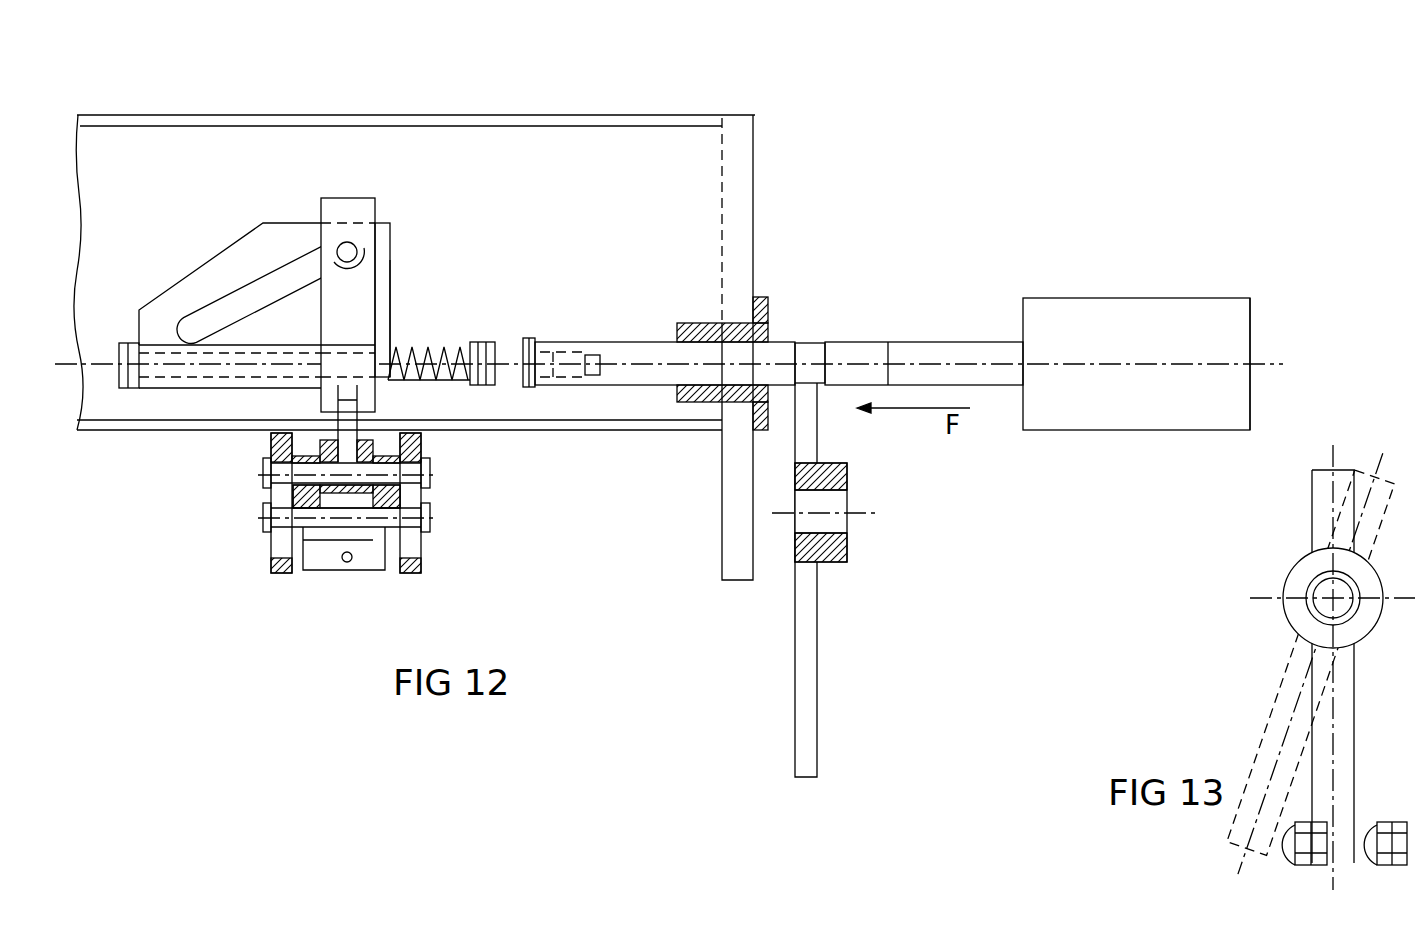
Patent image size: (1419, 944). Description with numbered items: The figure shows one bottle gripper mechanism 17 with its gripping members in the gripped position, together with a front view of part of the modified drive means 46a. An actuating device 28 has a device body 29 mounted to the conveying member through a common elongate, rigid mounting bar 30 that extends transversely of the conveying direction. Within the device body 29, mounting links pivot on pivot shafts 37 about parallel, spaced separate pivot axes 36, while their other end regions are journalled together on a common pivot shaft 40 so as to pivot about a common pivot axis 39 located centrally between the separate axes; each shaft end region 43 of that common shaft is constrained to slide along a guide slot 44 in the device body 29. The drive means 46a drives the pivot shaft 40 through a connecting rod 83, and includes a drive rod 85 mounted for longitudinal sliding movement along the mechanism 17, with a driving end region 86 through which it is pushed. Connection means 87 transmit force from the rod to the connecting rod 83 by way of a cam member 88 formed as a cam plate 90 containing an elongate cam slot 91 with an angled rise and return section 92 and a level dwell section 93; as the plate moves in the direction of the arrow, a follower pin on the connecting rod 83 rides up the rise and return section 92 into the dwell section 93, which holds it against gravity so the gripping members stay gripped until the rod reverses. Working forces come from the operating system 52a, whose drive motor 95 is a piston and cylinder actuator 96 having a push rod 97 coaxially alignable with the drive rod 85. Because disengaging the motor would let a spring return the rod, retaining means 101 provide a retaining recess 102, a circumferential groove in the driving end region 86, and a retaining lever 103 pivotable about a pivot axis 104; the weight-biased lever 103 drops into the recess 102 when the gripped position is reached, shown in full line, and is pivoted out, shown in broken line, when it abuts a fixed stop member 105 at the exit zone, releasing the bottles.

In FIG. 12, the bottle gripper mechanism 17 is at (369, 540).
In FIG. 12, the actuating device 28 is at (407, 514).
In FIG. 12, the device body 29 is at (425, 444).
In FIG. 12, the mounting bar 30 is at (583, 157).
In FIG. 12, the separate pivot axis 36 is at (430, 525).
In FIG. 12, the pivot shaft 37 is at (300, 515).
In FIG. 12, the common pivot axis 39 is at (410, 478).
In FIG. 12, the pivot shaft 40 is at (292, 460).
In FIG. 12, the shaft end region 43 is at (280, 479).
In FIG. 12, the guide slot 44 is at (282, 543).
In FIG. 12, the drive means 46a is at (362, 182).
In FIG. 12, the operating system 52a is at (1070, 322).
In FIG. 12, the connecting rod 83 is at (380, 385).
In FIG. 12, the drive rod 85 is at (636, 355).
In FIG. 12, the driving end region 86 is at (778, 350).
In FIG. 12, the connection means 87 is at (423, 288).
In FIG. 12, the cam member 88 is at (398, 320).
In FIG. 12, the cam plate 90 is at (388, 275).
In FIG. 12, the cam slot 91 is at (228, 305).
In FIG. 12, the rise and return section 92 is at (252, 272).
In FIG. 12, the dwell section 93 is at (313, 240).
In FIG. 12, the drive motor 95 is at (1133, 290).
In FIG. 12, the piston and cylinder actuator 96 is at (1237, 327).
In FIG. 12, the push rod 97 is at (925, 355).
In FIG. 12, the retaining means 101 is at (882, 534).
In FIG. 13, the retaining means 101 is at (1261, 684).
In FIG. 12, the retaining recess 102 is at (810, 357).
In FIG. 12, the retaining lever 103 is at (806, 695).
In FIG. 13, the retaining lever 103 is at (1322, 738).
In FIG. 12, the pivot axis 104 is at (860, 513).
In FIG. 13, the pivot axis 104 is at (1333, 598).
In FIG. 13, the stop member 105 is at (1385, 858).